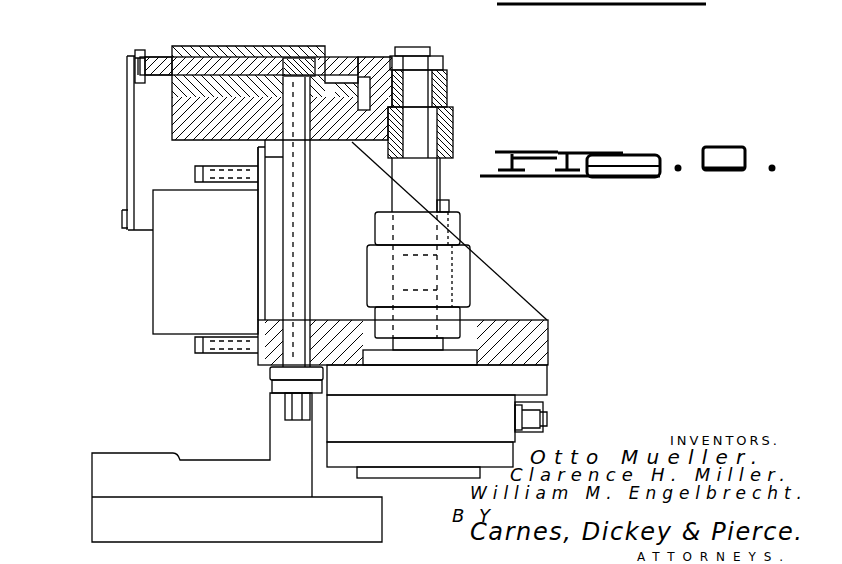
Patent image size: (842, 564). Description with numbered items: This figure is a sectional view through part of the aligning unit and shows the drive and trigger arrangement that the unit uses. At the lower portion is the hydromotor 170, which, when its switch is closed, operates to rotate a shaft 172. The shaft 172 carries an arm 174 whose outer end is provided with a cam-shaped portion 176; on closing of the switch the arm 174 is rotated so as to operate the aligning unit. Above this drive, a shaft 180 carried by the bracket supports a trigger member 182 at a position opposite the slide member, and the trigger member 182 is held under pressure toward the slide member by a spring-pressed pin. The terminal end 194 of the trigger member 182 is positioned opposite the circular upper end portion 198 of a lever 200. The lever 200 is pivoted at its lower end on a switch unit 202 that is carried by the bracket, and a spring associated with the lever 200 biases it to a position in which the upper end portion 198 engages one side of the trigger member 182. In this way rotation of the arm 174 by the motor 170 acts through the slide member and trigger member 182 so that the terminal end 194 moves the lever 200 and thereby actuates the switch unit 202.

The hydromotor 170 is at (425, 457).
The shaft 172 is at (412, 43).
The arm 174 is at (447, 83).
The cam-shaped portion 176 is at (358, 63).
The shaft 180 is at (302, 194).
The trigger member 182 is at (158, 57).
The terminal end 194 is at (140, 68).
The circular upper end portion 198 is at (143, 50).
The lever 200 is at (128, 145).
The switch unit 202 is at (170, 272).